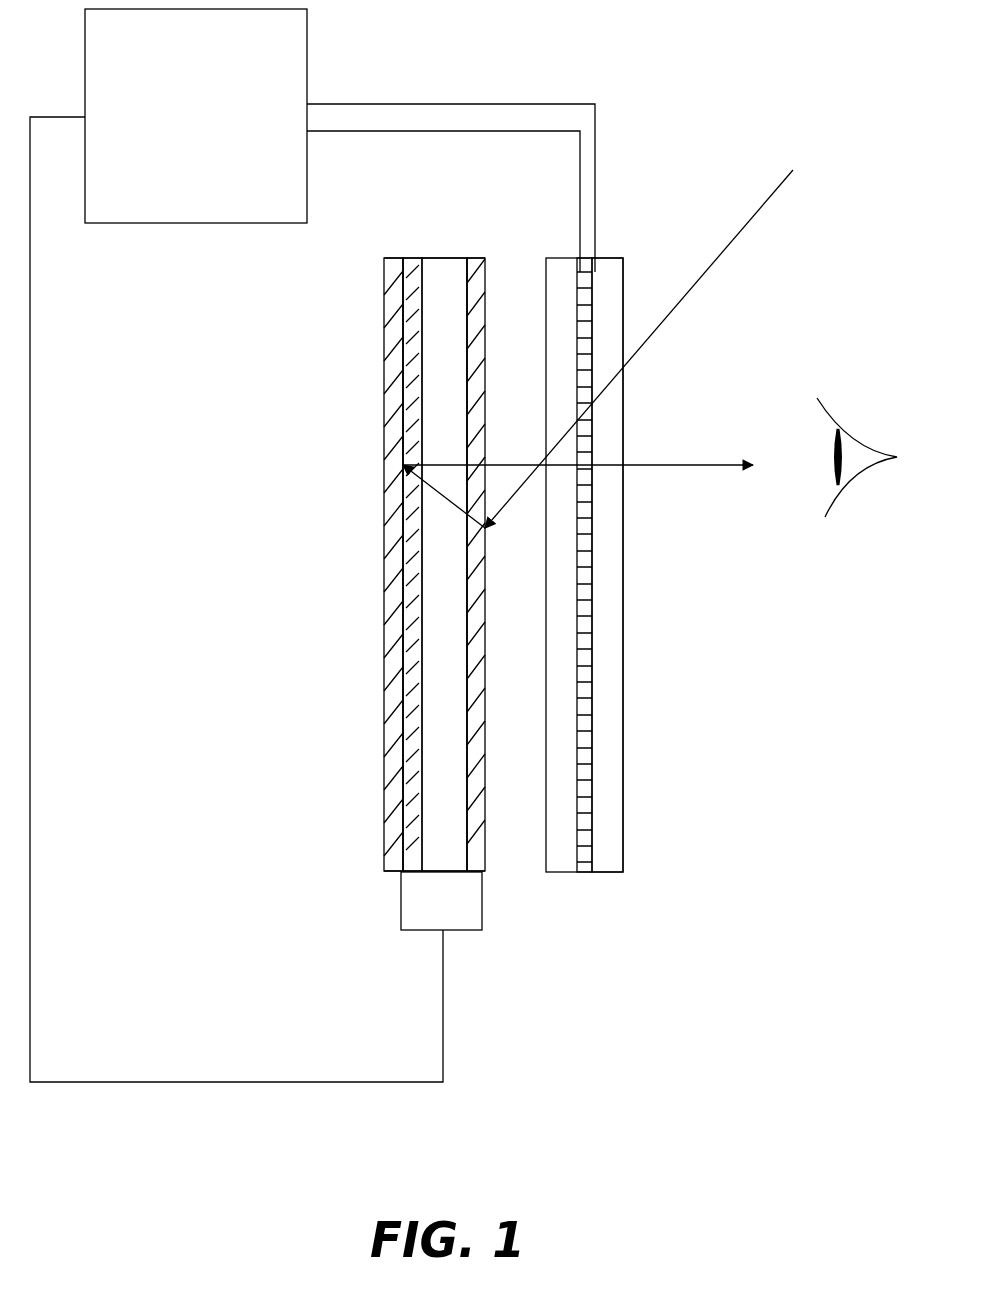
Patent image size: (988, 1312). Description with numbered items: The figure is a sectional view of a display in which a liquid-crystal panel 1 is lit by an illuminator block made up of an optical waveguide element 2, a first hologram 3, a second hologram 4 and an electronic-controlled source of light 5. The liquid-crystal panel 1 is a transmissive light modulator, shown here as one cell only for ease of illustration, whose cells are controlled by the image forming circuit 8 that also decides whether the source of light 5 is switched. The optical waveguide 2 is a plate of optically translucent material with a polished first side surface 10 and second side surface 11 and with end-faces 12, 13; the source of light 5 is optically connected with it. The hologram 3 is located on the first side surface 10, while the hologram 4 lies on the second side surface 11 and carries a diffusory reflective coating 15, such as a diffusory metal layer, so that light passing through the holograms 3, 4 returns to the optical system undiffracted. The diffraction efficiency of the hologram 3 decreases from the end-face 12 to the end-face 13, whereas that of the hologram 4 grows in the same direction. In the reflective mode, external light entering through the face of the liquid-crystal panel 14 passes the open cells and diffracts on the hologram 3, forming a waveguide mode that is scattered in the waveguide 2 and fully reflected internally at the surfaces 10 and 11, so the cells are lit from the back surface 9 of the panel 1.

The liquid-crystal panel 1 is at (612, 853).
The optical waveguide element 2 is at (432, 818).
The first hologram 3 is at (482, 718).
The second hologram 4 is at (402, 547).
The electronic-controlled source of light 5 is at (463, 913).
The image forming circuit 8 is at (196, 116).
The back surface 9 is at (547, 800).
The first side surface 10 is at (465, 780).
The second side surface 11 is at (420, 645).
The end-face 12 is at (437, 872).
The end-face 13 is at (437, 258).
The face of the liquid-crystal panel 14 is at (623, 663).
The diffusory reflective coating 15 is at (384, 384).